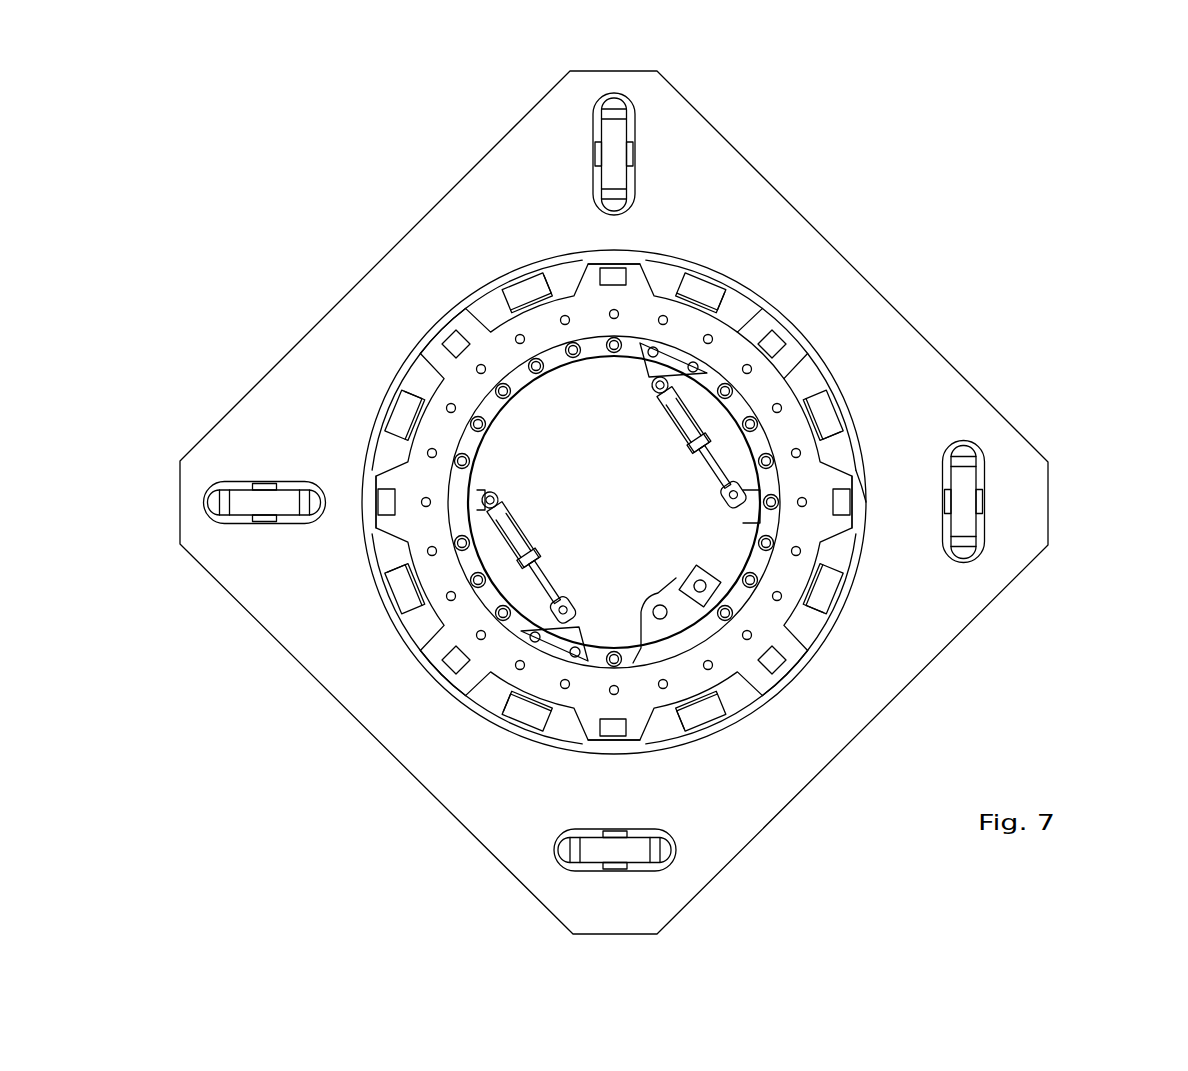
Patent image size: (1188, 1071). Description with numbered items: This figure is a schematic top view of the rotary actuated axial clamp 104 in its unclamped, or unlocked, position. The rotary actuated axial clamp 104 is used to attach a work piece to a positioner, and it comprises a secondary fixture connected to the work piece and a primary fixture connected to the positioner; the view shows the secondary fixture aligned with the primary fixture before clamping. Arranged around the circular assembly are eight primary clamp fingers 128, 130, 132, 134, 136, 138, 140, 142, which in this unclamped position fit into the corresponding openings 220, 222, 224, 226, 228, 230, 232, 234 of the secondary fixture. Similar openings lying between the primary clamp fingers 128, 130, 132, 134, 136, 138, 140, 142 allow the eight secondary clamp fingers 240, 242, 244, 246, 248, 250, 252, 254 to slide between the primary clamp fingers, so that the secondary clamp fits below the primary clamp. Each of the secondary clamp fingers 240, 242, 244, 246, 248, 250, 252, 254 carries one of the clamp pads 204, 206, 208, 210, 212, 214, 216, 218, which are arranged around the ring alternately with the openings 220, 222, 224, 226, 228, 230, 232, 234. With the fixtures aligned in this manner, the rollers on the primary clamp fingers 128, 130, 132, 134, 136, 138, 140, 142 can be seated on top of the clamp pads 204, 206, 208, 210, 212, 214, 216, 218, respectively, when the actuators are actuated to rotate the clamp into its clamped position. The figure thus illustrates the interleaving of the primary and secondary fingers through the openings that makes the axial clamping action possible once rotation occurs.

The rotary actuated axial clamp 104 is at (830, 111).
The primary clamp finger 128 is at (752, 320).
The primary clamp finger 130 is at (620, 265).
The primary clamp finger 132 is at (428, 358).
The primary clamp finger 134 is at (387, 480).
The primary clamp finger 136 is at (447, 640).
The primary clamp finger 138 is at (668, 745).
The primary clamp finger 140 is at (750, 655).
The primary clamp finger 142 is at (833, 522).
The clamp pad 204 is at (715, 290).
The clamp pad 206 is at (512, 287).
The clamp pad 208 is at (405, 415).
The clamp pad 210 is at (403, 592).
The clamp pad 212 is at (528, 712).
The clamp pad 214 is at (707, 710).
The clamp pad 216 is at (823, 582).
The clamp pad 218 is at (825, 415).
The opening 220 is at (783, 337).
The opening 222 is at (640, 262).
The opening 224 is at (447, 330).
The opening 226 is at (373, 510).
The opening 228 is at (435, 660).
The opening 230 is at (614, 737).
The opening 232 is at (790, 668).
The opening 234 is at (862, 468).
The secondary clamp finger 240 is at (698, 263).
The secondary clamp finger 242 is at (555, 268).
The secondary clamp finger 244 is at (408, 387).
The secondary clamp finger 246 is at (387, 557).
The secondary clamp finger 248 is at (555, 728).
The secondary clamp finger 250 is at (683, 730).
The secondary clamp finger 252 is at (848, 552).
The secondary clamp finger 254 is at (817, 380).